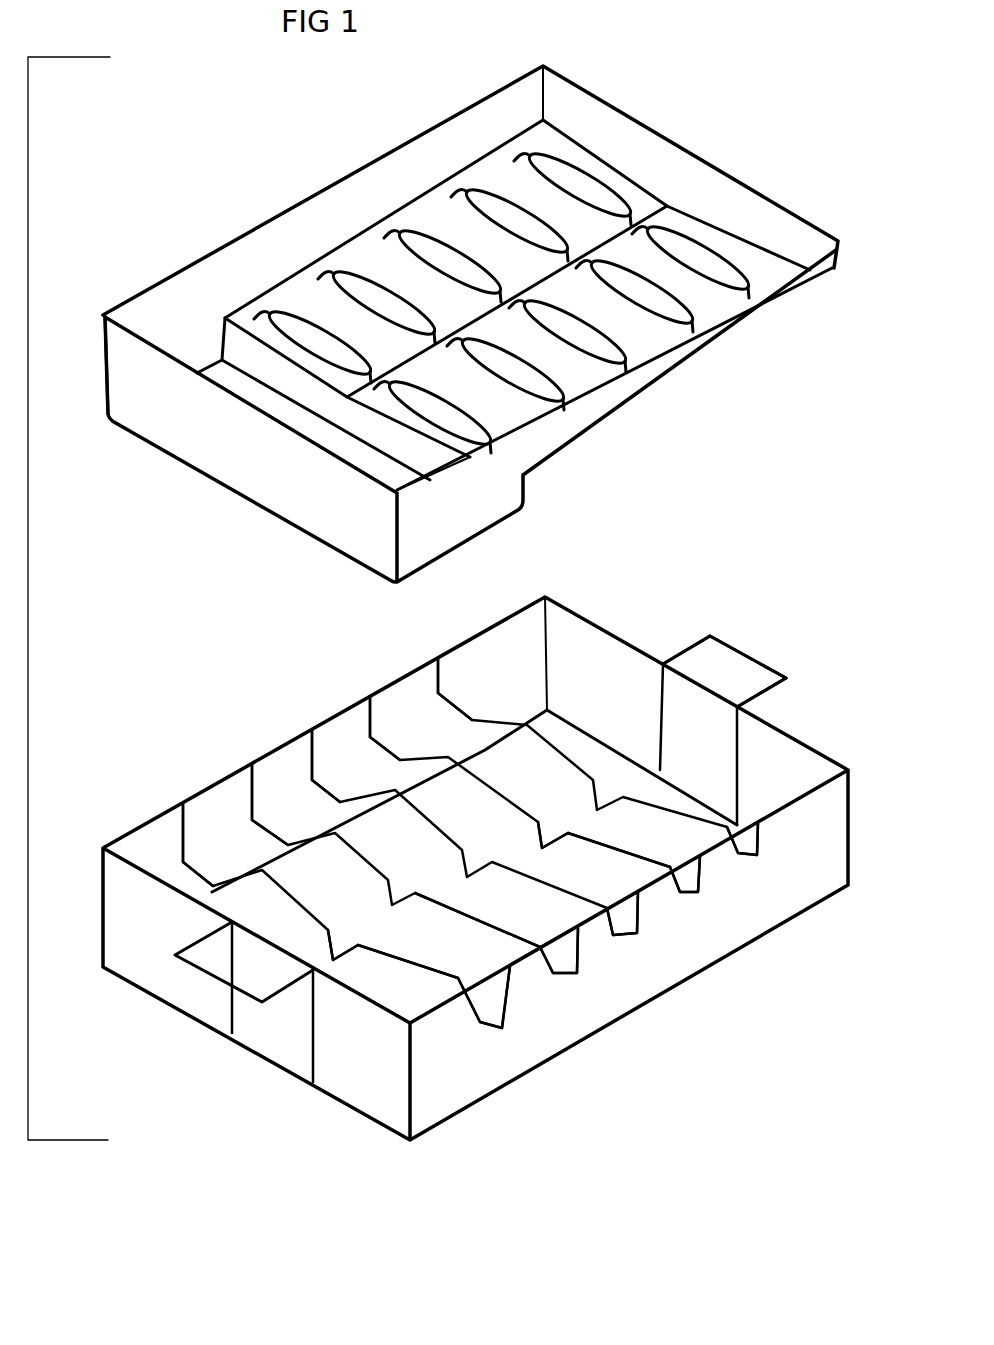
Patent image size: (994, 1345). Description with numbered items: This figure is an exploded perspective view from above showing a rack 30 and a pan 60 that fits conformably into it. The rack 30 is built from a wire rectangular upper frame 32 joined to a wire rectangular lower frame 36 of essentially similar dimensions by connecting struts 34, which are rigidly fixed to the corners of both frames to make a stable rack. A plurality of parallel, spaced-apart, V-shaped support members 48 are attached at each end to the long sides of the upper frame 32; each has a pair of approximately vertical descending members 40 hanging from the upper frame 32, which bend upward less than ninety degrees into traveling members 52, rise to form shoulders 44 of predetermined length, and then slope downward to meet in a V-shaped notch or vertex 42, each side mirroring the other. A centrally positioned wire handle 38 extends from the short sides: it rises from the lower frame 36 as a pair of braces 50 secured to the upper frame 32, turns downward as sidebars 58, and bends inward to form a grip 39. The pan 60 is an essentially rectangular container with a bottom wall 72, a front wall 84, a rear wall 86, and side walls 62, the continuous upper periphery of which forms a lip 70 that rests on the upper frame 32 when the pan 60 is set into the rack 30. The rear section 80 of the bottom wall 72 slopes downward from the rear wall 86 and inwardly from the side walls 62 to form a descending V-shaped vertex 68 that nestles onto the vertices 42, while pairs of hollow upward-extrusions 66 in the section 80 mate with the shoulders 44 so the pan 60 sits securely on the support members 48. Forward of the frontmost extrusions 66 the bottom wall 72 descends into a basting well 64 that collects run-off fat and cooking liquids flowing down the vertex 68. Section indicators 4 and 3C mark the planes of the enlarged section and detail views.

The rack 30 is at (268, 745).
The upper frame 32 is at (335, 713).
The connecting struts 34 is at (546, 676).
The lower frame 36 is at (670, 982).
The handle 38 is at (707, 632).
The grip 39 is at (766, 663).
The vertical descending members 40 is at (183, 830).
The vertex 42 is at (597, 812).
The shoulders 44 is at (543, 743).
The V-shaped support members 48 is at (647, 797).
The braces 50 is at (660, 720).
The traveling members 52 is at (205, 878).
The sidebars 58 is at (675, 655).
The pan 60 is at (245, 223).
The side walls 62 is at (423, 153).
The basting well 64 is at (332, 428).
The hollow upward-extrusions 66 is at (267, 313).
The vertex 68 is at (643, 218).
The lip 70 is at (103, 312).
The bottom wall 72 is at (633, 317).
The rear section of bottom wall 80 is at (705, 296).
The front wall 84 is at (352, 537).
The rear wall 86 is at (735, 187).
The section line 4 is at (410, 87).
The section line 3C is at (667, 72).